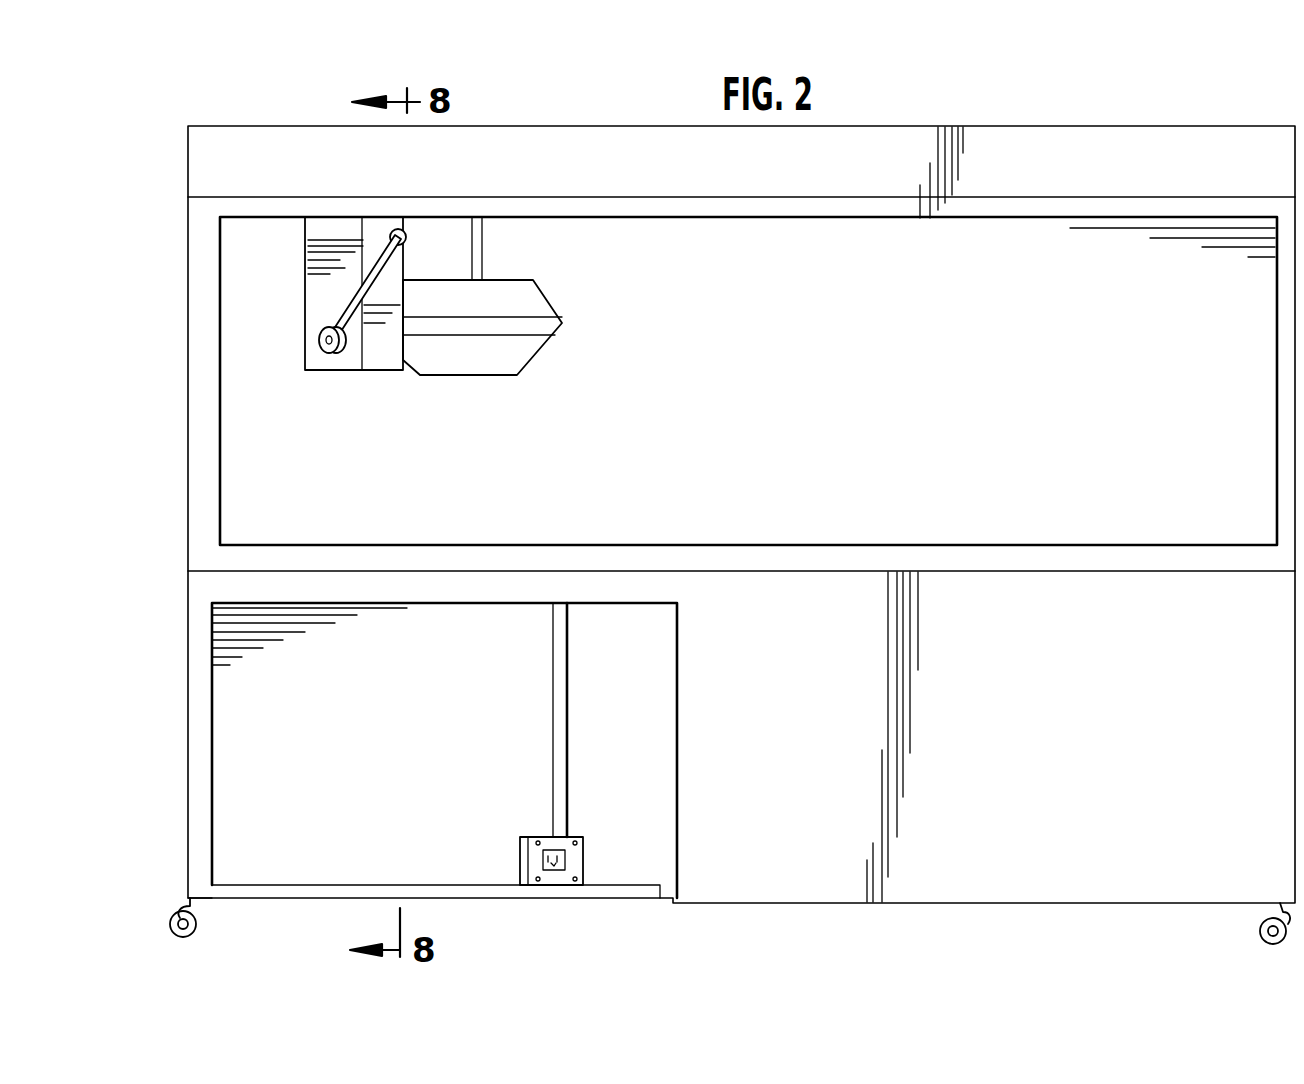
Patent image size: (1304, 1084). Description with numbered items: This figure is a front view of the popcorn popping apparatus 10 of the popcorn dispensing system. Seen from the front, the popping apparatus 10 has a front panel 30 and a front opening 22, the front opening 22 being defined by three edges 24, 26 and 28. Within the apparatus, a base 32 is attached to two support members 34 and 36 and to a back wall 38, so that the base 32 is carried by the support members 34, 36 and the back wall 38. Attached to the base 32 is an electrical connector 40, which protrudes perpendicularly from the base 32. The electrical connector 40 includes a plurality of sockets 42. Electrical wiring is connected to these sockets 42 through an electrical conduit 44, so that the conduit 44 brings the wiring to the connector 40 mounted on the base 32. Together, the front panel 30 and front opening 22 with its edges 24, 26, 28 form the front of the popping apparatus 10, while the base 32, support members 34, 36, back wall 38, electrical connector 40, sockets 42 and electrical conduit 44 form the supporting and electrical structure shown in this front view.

The popcorn popping apparatus 10 is at (150, 138).
The front opening 22 is at (284, 836).
The edge 24 is at (210, 740).
The edge 26 is at (292, 600).
The edge 28 is at (677, 783).
The front panel 30 is at (1052, 712).
The base 32 is at (545, 830).
The support member 34 is at (520, 860).
The support member 36 is at (377, 880).
The back wall 38 is at (383, 695).
The electrical connector 40 is at (567, 858).
The sockets 42 is at (557, 863).
The electrical conduit 44 is at (567, 772).